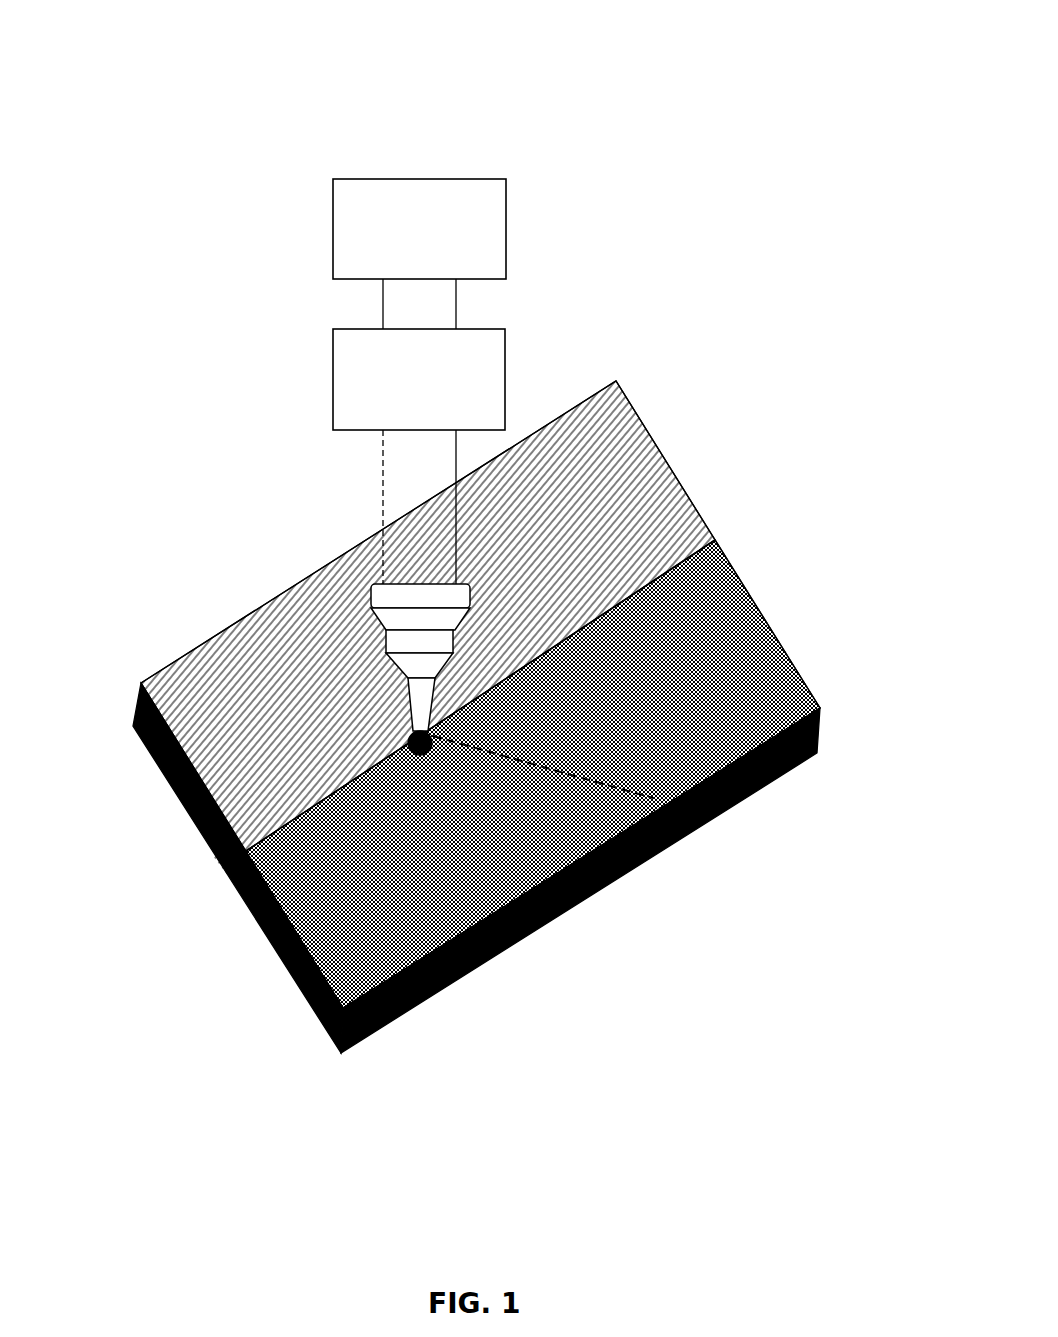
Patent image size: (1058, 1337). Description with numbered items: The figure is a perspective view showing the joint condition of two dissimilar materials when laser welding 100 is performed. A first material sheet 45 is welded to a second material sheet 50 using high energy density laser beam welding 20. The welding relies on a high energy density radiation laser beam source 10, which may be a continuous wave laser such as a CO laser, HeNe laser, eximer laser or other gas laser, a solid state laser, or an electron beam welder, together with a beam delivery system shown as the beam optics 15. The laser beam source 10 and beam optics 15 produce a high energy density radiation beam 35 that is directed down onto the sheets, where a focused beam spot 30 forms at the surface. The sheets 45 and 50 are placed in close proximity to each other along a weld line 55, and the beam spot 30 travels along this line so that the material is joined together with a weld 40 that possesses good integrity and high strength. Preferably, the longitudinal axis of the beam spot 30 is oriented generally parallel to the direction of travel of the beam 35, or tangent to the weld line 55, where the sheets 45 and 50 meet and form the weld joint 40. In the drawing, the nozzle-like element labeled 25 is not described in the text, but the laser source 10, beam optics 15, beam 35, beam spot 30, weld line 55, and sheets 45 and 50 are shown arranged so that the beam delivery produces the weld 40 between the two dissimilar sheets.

The laser welding 100 is at (772, 74).
The laser beam source 10 is at (482, 170).
The beam optics 15 is at (482, 320).
The high energy density laser beam welding 20 is at (552, 212).
The focusing nozzle / beam delivery head 25 is at (363, 577).
The beam spot 30 is at (703, 806).
The high energy density radiation beam 35 is at (402, 714).
The weld 40 is at (205, 848).
The first material sheet 45 is at (628, 395).
The second material sheet 50 is at (777, 650).
The weld line 55 is at (707, 533).